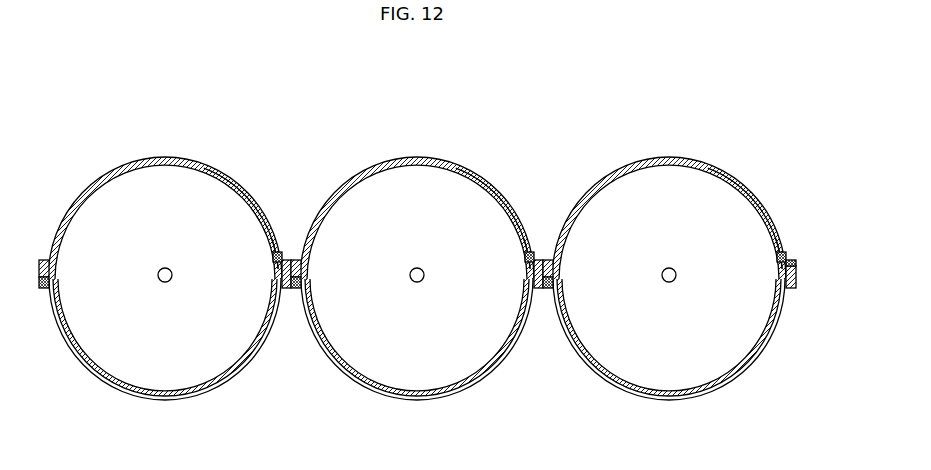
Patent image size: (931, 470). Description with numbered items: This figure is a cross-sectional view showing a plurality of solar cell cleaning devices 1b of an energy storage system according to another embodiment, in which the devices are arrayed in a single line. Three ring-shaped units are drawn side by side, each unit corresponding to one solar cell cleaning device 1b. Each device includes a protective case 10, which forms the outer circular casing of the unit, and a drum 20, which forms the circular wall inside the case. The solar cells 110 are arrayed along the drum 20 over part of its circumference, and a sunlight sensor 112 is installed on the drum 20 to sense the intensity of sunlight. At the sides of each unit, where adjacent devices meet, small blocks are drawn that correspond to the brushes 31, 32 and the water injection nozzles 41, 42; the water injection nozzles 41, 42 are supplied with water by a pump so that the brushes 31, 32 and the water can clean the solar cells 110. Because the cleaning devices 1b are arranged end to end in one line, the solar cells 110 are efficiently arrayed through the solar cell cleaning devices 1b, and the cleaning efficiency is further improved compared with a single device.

The solar cell cleaning devices 1b is at (692, 99).
The protective case 10 is at (417, 361).
The drum 20 is at (417, 196).
The solar cells 110 is at (493, 191).
The sunlight sensor 112 is at (494, 240).
The brush 31 is at (326, 266).
The brush 32 is at (511, 282).
The water injection nozzle 41 is at (326, 289).
The water injection nozzle 42 is at (511, 263).